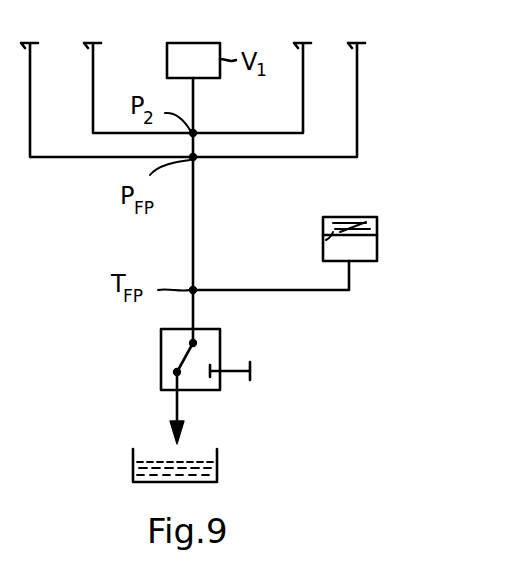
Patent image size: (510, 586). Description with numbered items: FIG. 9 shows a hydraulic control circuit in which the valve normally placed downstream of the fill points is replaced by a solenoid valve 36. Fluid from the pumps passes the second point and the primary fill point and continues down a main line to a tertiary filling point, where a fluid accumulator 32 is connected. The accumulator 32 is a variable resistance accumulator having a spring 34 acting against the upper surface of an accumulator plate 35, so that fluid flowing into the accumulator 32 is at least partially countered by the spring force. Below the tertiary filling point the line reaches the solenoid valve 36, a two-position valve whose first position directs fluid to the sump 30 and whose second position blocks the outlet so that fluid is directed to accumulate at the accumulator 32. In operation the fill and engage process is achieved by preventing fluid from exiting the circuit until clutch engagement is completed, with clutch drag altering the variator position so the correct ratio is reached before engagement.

The sump 30 is at (132, 463).
The fluid accumulator 32 is at (367, 253).
The spring 34 is at (353, 233).
The accumulator plate 35 is at (328, 240).
The solenoid valve 36 is at (220, 338).